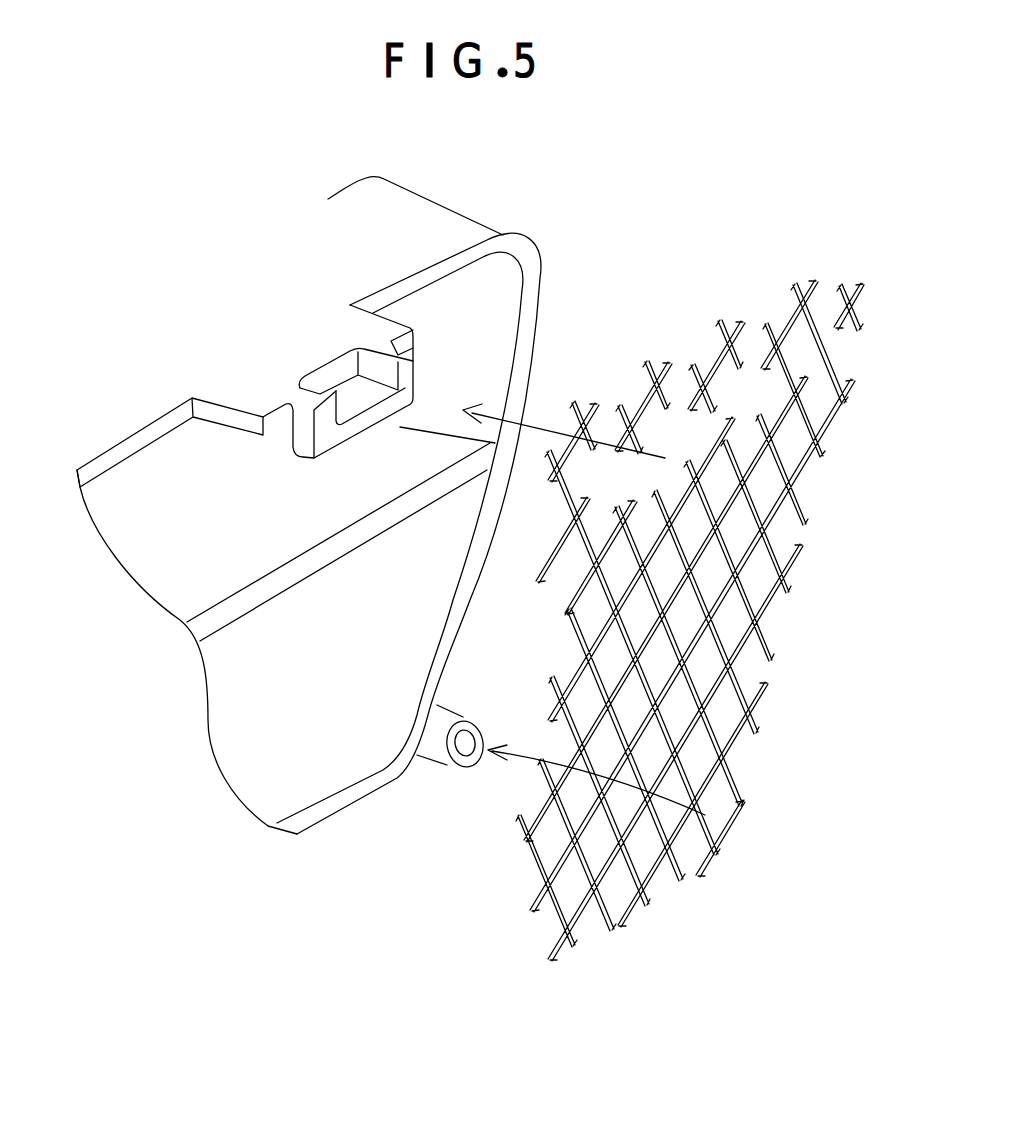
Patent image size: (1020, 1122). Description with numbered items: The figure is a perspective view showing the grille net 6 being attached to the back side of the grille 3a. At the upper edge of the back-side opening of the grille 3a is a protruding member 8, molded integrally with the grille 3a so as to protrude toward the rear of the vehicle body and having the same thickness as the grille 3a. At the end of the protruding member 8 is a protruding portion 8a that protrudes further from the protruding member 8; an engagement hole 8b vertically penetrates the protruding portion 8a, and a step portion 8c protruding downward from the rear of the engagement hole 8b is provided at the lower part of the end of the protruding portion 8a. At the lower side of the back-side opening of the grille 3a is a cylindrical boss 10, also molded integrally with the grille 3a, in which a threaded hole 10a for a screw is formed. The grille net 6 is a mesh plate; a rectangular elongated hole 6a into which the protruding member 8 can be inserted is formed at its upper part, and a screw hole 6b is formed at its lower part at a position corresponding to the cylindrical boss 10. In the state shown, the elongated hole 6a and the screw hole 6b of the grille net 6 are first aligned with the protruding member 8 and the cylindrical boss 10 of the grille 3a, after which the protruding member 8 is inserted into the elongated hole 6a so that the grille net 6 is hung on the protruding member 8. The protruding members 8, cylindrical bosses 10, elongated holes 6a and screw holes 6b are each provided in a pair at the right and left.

The grille 3a is at (448, 223).
The protruding member 8 is at (222, 440).
The protruding portion 8a is at (400, 350).
The engagement hole 8b is at (342, 392).
The step portion 8c is at (365, 420).
The cylindrical boss 10 is at (443, 723).
The threaded hole 10a is at (463, 745).
The grille net 6 is at (765, 642).
The elongated hole 6a is at (688, 443).
The screw hole 6b is at (672, 815).